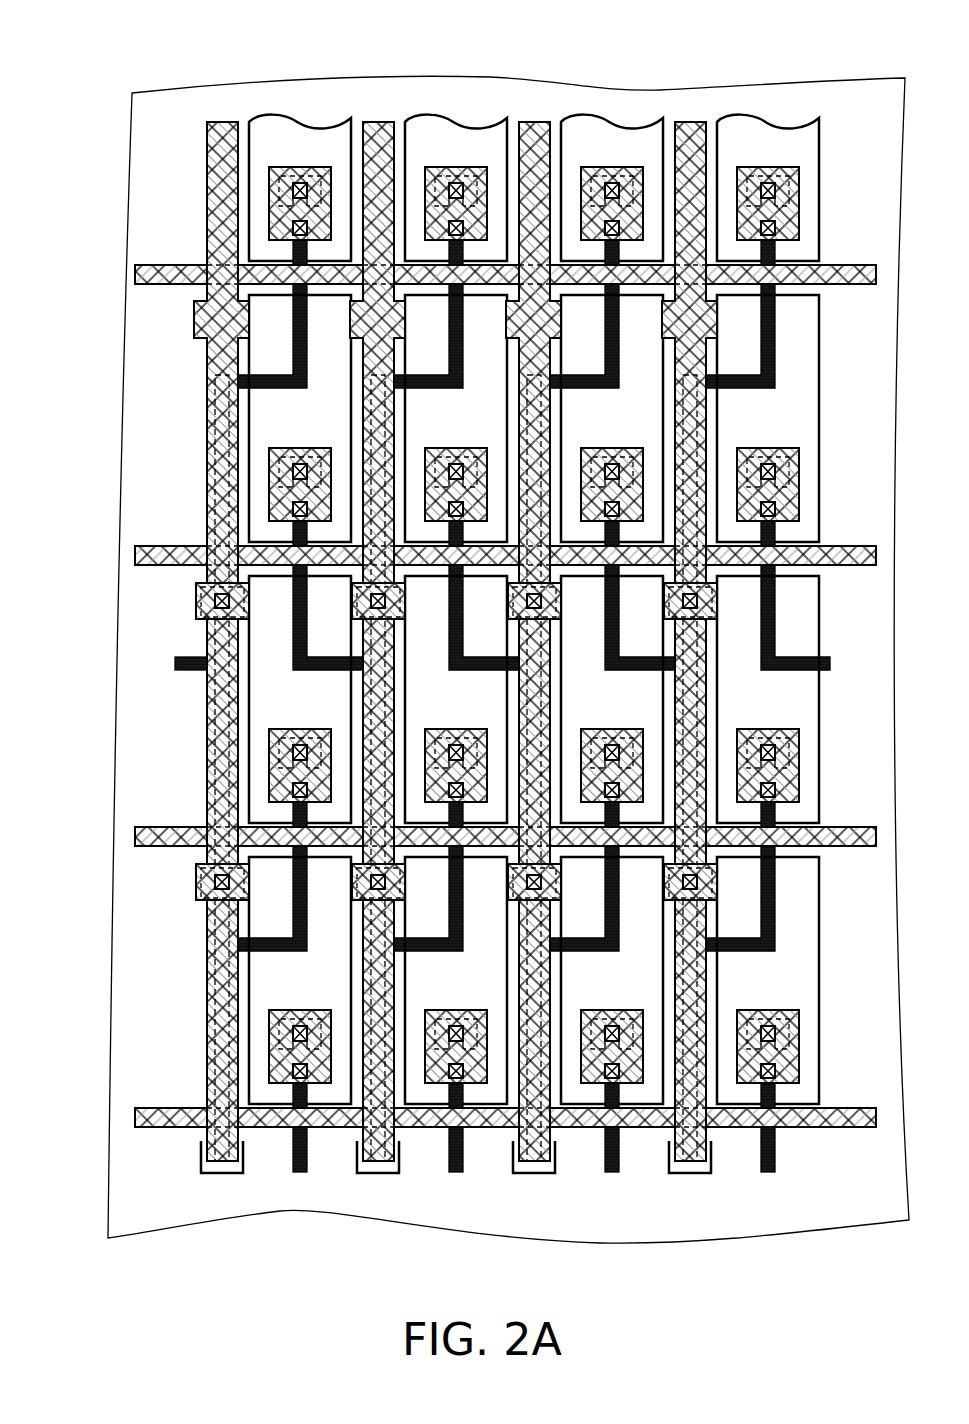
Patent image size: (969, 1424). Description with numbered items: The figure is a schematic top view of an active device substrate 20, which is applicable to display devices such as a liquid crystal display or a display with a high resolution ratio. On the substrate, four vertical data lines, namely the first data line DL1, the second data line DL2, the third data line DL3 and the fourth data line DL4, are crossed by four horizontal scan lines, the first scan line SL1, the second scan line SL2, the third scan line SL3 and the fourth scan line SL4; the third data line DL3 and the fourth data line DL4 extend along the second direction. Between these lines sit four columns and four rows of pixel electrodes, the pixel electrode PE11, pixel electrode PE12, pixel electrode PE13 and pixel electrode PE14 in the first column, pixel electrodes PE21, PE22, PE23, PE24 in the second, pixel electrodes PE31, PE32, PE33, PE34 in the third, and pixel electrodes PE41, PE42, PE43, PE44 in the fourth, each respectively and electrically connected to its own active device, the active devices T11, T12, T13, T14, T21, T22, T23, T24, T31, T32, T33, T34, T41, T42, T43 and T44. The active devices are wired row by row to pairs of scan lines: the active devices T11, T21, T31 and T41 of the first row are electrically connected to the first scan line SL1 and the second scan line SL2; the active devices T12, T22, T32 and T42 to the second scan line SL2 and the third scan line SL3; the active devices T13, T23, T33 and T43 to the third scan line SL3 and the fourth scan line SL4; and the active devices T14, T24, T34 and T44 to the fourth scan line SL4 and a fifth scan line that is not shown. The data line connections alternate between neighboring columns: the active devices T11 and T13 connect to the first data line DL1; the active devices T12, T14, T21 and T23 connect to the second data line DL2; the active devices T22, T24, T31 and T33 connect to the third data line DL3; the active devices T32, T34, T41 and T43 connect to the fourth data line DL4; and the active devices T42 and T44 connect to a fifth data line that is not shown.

The active device substrate 20 is at (877, 1284).
The first data line DL1 is at (222, 128).
The second data line DL2 is at (378, 128).
The third data line DL3 is at (534, 128).
The fourth data line DL4 is at (690, 128).
The first scan line SL1 is at (177, 275).
The second scan line SL2 is at (177, 556).
The third scan line SL3 is at (177, 837).
The fourth scan line SL4 is at (177, 1118).
The pixel electrode PE11 is at (271, 117).
The pixel electrode PE12 is at (247, 433).
The pixel electrode PE13 is at (247, 714).
The pixel electrode PE14 is at (247, 995).
The pixel electrode PE21 is at (427, 117).
The pixel electrode PE22 is at (507, 378).
The pixel electrode PE23 is at (507, 659).
The pixel electrode PE24 is at (507, 940).
The pixel electrode PE31 is at (583, 117).
The pixel electrode PE32 is at (663, 378).
The pixel electrode PE33 is at (663, 659).
The pixel electrode PE34 is at (663, 940).
The pixel electrode PE41 is at (739, 117).
The pixel electrode PE42 is at (819, 378).
The pixel electrode PE43 is at (819, 659).
The pixel electrode PE44 is at (819, 940).
The active device T11 is at (312, 162).
The active device T12 is at (262, 480).
The active device T13 is at (262, 761).
The active device T14 is at (262, 1042).
The active device T21 is at (468, 162).
The active device T22 is at (499, 476).
The active device T23 is at (499, 757).
The active device T24 is at (499, 1038).
The active device T31 is at (624, 162).
The active device T32 is at (655, 476).
The active device T33 is at (655, 757).
The active device T34 is at (655, 1038).
The active device T41 is at (780, 162).
The active device T42 is at (811, 476).
The active device T43 is at (811, 757).
The active device T44 is at (811, 1038).